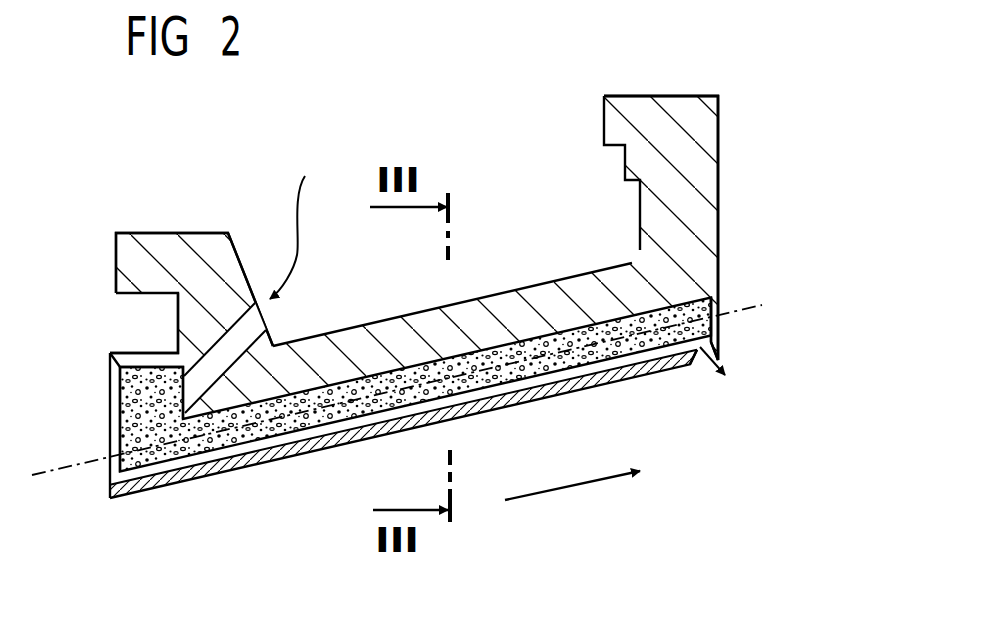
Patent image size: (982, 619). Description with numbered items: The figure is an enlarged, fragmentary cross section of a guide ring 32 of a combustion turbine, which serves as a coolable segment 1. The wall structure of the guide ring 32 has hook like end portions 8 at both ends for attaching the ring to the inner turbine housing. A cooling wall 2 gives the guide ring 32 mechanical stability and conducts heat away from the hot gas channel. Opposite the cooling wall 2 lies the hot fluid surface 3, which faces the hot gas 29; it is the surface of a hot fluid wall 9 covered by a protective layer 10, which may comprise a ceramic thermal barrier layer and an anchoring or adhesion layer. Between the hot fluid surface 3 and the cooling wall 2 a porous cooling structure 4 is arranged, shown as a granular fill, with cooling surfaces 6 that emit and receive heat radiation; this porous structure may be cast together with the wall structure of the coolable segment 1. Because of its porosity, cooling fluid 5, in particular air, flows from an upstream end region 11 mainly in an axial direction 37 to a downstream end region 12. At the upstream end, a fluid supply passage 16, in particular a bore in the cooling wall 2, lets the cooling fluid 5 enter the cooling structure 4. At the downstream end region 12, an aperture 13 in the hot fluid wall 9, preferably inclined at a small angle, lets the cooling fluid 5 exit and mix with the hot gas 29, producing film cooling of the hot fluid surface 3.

The coolable segment 1 is at (722, 172).
The guide ring 32 is at (661, 228).
The cooling wall 2 is at (537, 304).
The hot fluid surface 3 is at (530, 402).
The porous cooling structure 4 is at (223, 453).
The cooling fluid 5 is at (725, 423).
The cooling surfaces 6 is at (120, 390).
The hook like end portions 8 is at (162, 243).
The hot fluid wall 9 is at (147, 476).
The protective layer 10 is at (648, 370).
The upstream end region 11 is at (186, 330).
The downstream end region 12 is at (716, 297).
The aperture 13 is at (717, 344).
The fluid supply passage 16 is at (257, 306).
The hot gas 29 is at (560, 490).
The axial direction 37 is at (60, 473).